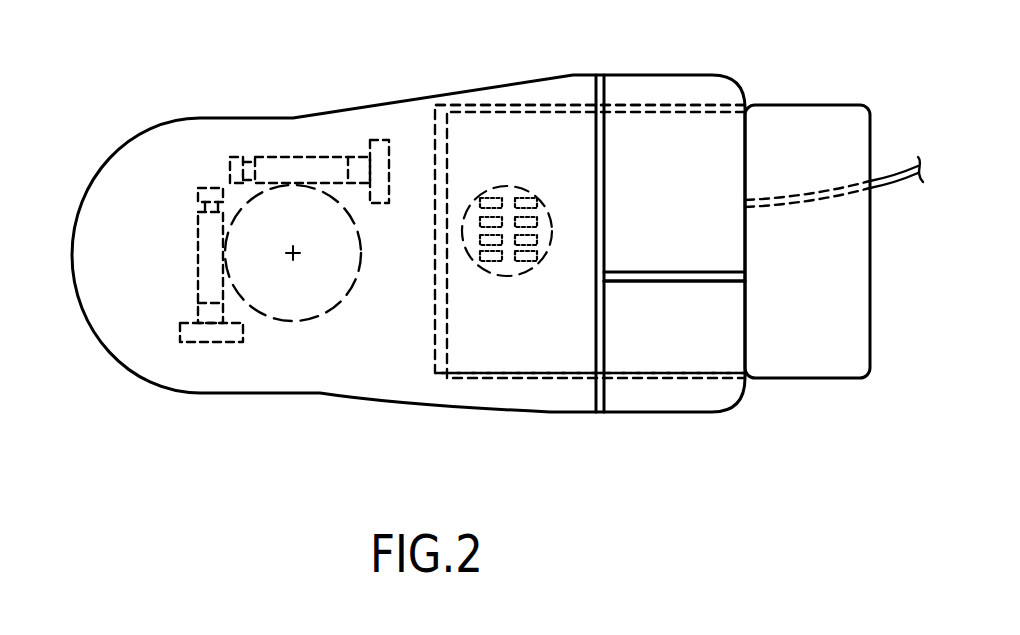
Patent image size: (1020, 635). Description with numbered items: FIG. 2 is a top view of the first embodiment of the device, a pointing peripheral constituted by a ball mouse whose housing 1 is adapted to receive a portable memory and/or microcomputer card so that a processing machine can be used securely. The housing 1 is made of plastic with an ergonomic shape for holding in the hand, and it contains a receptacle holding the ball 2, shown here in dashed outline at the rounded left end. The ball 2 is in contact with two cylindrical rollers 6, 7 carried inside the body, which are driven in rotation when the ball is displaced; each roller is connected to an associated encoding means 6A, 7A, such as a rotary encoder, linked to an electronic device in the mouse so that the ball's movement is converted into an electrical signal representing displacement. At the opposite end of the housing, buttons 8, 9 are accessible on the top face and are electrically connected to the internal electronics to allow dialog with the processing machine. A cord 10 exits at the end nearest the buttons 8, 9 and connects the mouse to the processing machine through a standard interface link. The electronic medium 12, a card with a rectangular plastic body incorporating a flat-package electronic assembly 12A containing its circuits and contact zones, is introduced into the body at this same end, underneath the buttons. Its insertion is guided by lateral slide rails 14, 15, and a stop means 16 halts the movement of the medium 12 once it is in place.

The housing 1 is at (168, 120).
The ball 2 is at (320, 297).
The cylindrical roller 6 is at (295, 157).
The encoding means 6A is at (382, 140).
The cylindrical roller 7 is at (207, 262).
The encoding means 7A is at (212, 332).
The button 8 is at (707, 93).
The button 9 is at (713, 395).
The cord 10 is at (895, 172).
The electronic medium 12 is at (848, 120).
The electronic assembly 12A is at (507, 203).
The lateral slide rail 14 is at (552, 104).
The lateral slide rail 15 is at (543, 375).
The stop means 16 is at (435, 138).